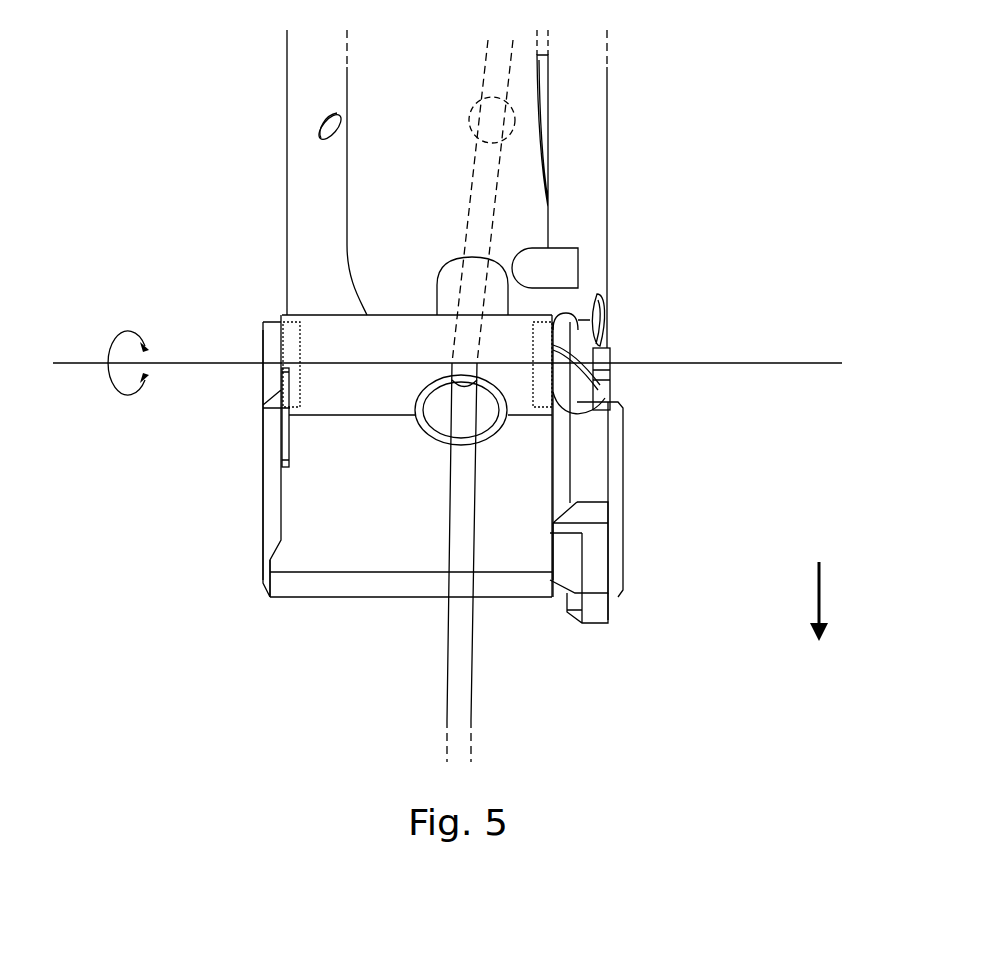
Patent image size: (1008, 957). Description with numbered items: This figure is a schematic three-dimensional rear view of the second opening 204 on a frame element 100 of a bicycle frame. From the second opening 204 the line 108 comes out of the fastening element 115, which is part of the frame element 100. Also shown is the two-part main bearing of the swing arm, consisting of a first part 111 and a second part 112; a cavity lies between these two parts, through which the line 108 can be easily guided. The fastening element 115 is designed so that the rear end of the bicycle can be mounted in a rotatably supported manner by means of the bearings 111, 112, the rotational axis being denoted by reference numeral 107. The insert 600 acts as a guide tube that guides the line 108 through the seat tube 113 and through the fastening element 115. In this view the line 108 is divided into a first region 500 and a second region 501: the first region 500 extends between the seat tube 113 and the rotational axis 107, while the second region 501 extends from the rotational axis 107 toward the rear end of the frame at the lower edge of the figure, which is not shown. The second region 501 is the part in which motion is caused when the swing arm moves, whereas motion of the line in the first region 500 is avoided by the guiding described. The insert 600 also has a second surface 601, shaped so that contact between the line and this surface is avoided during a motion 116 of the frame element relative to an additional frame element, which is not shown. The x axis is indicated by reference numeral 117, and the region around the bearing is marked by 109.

The frame element 100 is at (616, 115).
The rotational axis 107 is at (735, 363).
The line 108 is at (497, 167).
The receiving space 109 is at (709, 162).
The first part of main bearing 111 is at (602, 326).
The second part of main bearing 112 is at (264, 352).
The seat tube 113 is at (347, 80).
The fastening element 115 is at (317, 313).
The motion 116 is at (123, 331).
The x axis 117 is at (818, 580).
The second opening 204 is at (445, 381).
The first region of the line 500 is at (425, 313).
The second region of the line 501 is at (471, 662).
The insert 600 is at (508, 305).
The second surface of the insert 601 is at (437, 426).